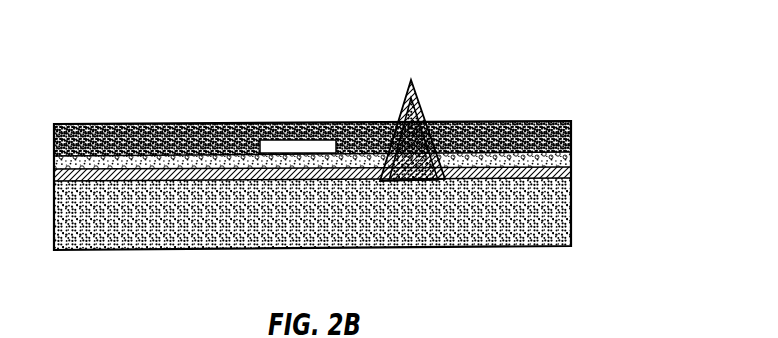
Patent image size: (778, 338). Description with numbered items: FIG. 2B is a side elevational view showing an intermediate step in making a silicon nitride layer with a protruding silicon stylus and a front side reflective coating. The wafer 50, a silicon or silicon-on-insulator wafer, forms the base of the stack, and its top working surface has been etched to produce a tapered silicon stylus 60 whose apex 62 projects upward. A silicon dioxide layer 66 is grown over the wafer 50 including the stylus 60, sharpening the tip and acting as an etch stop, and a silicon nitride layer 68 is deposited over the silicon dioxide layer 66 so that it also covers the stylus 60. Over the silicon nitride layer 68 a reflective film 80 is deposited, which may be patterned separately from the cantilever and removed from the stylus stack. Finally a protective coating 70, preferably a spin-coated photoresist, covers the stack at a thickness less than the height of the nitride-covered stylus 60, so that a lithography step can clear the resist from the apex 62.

The wafer 50 is at (563, 224).
The silicon stylus 60 is at (463, 103).
The apex 62 is at (426, 72).
The silicon dioxide layer 66 is at (563, 163).
The silicon nitride layer 68 is at (563, 147).
The protective coating 70 is at (556, 114).
The reflective film 80 is at (288, 138).